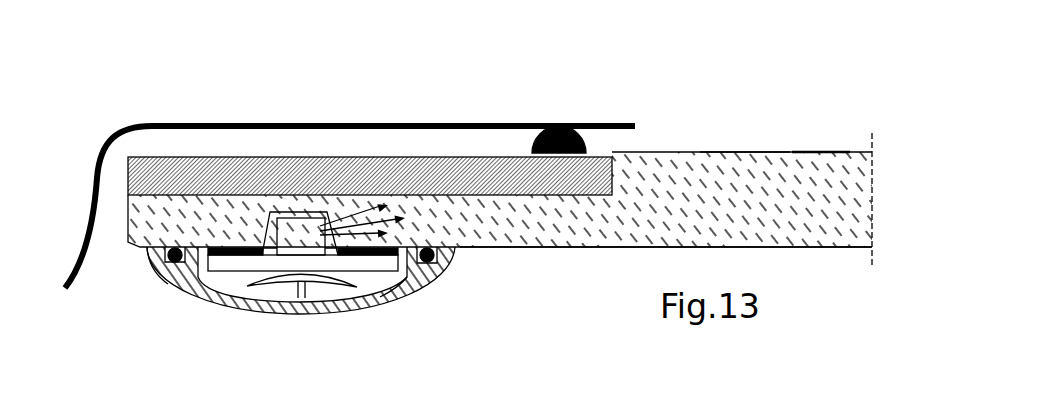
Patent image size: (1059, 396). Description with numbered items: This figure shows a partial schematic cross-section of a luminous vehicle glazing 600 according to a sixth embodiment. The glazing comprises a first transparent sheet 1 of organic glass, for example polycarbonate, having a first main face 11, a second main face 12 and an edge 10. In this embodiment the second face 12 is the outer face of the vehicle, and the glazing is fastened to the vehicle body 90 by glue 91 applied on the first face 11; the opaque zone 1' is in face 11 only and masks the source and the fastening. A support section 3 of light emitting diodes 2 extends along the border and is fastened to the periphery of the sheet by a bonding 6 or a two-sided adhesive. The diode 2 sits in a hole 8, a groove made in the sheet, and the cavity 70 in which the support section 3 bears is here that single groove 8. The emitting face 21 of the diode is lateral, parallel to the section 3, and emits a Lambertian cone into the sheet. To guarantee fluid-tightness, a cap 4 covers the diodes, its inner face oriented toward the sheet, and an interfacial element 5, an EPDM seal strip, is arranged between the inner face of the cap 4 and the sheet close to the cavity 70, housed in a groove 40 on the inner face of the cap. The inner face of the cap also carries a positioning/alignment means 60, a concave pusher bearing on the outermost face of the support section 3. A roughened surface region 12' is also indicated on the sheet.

The luminous vehicle glazing 600 is at (627, 80).
The first transparent sheet 1 is at (529, 198).
The opaque zone 1' is at (370, 139).
The first main face 11 is at (773, 152).
The second main face 12 is at (666, 279).
The roughened surface region 12' is at (824, 121).
The edge 10 is at (107, 203).
The vehicle body 90 is at (238, 123).
The glue 91 is at (533, 146).
The interfacial element 5 is at (176, 248).
The support section 3 is at (207, 303).
The cap 4 is at (393, 296).
The groove 40 is at (168, 283).
The bonding 6 is at (241, 288).
The hole 8 is at (275, 213).
The light emitting diode 2 is at (290, 225).
The emitting face 21 is at (303, 210).
The positioning/alignment means 60 is at (270, 284).
The cavity 70 is at (323, 294).